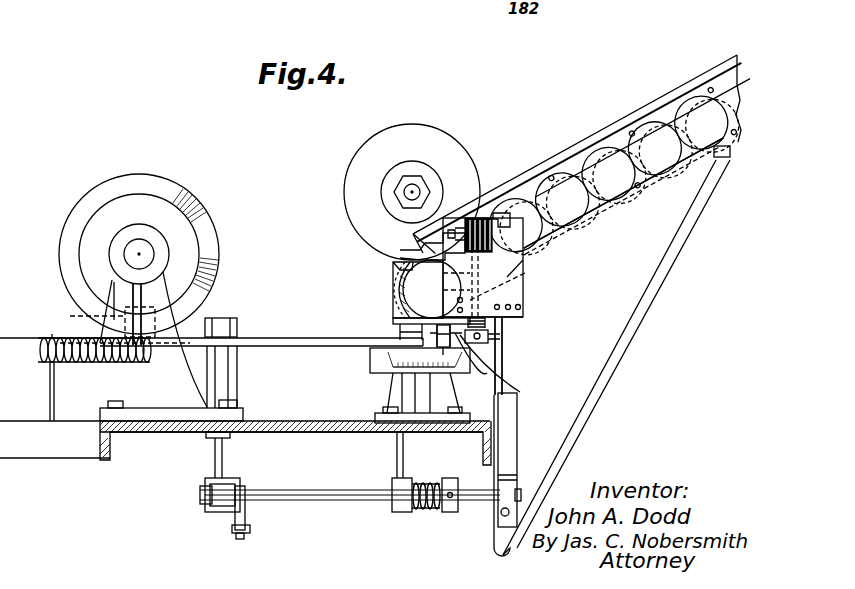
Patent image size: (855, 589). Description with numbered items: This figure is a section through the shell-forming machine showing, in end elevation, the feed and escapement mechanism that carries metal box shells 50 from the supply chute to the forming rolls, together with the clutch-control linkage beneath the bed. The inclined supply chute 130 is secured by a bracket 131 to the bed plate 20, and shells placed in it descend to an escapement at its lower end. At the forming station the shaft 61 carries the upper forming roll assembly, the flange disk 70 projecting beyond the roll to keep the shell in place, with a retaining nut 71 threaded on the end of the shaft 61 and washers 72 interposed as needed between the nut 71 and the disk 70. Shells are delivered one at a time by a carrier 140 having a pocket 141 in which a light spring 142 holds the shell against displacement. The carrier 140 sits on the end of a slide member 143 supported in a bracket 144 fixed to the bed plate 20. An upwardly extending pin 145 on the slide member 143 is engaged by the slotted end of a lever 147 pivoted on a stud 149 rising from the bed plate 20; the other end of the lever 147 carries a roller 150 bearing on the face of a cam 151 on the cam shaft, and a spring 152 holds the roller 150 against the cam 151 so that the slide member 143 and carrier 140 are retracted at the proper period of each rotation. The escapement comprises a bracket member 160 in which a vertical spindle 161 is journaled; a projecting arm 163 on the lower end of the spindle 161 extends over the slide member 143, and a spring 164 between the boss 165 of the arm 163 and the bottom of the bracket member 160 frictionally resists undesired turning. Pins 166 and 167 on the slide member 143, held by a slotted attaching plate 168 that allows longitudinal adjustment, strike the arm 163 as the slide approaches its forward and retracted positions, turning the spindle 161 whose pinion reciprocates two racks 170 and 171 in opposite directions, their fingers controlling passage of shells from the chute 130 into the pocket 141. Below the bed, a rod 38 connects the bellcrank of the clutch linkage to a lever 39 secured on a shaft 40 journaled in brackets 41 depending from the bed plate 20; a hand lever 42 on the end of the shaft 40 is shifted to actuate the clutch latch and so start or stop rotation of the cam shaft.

The bed plate 20 is at (328, 432).
The rod 38 is at (250, 531).
The lever 39 is at (247, 512).
The shaft 40 is at (347, 500).
The brackets 41 is at (216, 462).
The hand lever 42 is at (512, 438).
The metal box shell 50 is at (614, 136).
The shaft 61 is at (406, 192).
The flange disk 70 is at (365, 156).
The retaining nut 71 is at (422, 180).
The washers 72 is at (412, 164).
The inclined supply chute 130 is at (640, 195).
The bracket 131 is at (622, 352).
The carrier 140 is at (392, 300).
The pocket 141 is at (403, 280).
The light spring 142 is at (392, 262).
The slide member 143 is at (400, 362).
The bracket 144 is at (398, 392).
The pin 145 is at (392, 322).
The lever 147 is at (284, 342).
The stud 149 is at (230, 372).
The roller 150 is at (125, 316).
The cam 151 is at (212, 240).
The spring 152 is at (95, 362).
The bracket member 160 is at (517, 282).
The vertical spindle 161 is at (482, 300).
The projecting arm 163 is at (505, 378).
The spring 164 is at (486, 324).
The boss 165 is at (491, 338).
The pin 166 is at (503, 388).
The pin 167 is at (540, 243).
The slotted attaching plate 168 is at (455, 350).
The rack 170 is at (400, 248).
The rack 171 is at (492, 217).